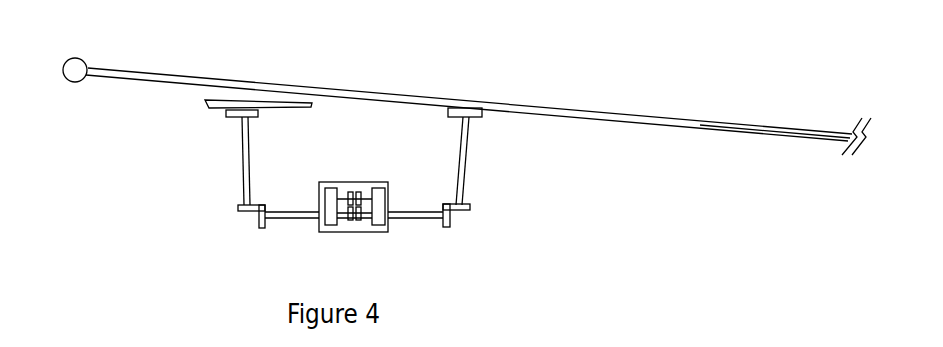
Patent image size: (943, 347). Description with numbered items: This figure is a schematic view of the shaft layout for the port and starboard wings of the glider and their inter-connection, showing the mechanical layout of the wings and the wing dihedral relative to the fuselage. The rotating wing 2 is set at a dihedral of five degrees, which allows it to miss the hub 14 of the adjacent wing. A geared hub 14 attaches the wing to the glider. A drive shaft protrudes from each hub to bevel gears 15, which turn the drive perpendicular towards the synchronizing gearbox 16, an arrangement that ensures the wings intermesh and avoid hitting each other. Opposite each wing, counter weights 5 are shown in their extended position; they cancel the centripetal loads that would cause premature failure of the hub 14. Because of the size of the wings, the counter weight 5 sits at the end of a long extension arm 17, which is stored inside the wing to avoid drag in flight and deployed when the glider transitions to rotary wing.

The rotating wing 2 is at (207, 103).
The counter weight 5 is at (74, 58).
The geared hub 14 is at (258, 118).
The bevel gears 15 is at (242, 183).
The synchronizing gearbox 16 is at (358, 182).
The extension arm 17 is at (222, 81).